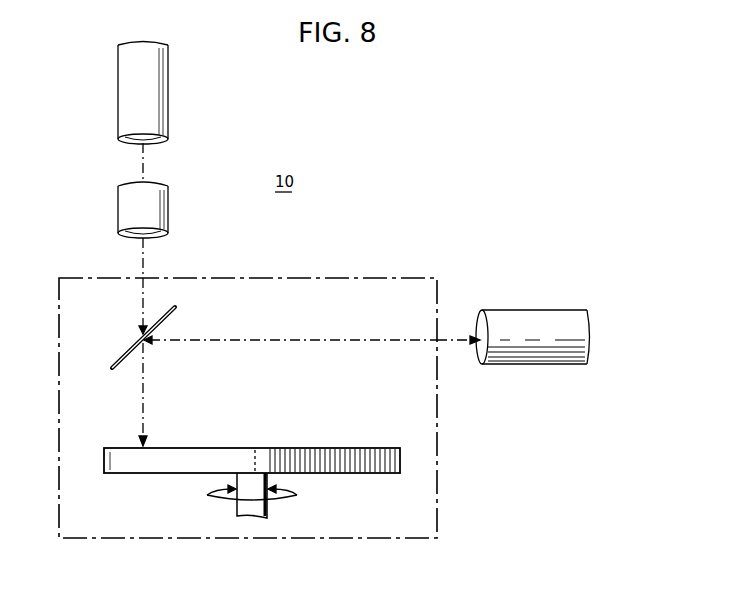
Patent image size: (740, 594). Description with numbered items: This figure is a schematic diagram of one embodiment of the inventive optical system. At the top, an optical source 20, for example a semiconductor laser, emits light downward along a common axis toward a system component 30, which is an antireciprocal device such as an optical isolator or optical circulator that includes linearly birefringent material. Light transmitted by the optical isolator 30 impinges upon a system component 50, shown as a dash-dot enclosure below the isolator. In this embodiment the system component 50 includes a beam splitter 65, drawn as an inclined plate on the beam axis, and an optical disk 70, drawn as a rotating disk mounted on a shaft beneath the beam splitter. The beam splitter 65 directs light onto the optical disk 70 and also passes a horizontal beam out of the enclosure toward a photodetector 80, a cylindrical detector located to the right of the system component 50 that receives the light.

The optical source 20 is at (120, 92).
The system component 30 is at (120, 207).
The system component 50 is at (312, 283).
The beam splitter 65 is at (174, 318).
The optical disk 70 is at (184, 448).
The photodetector 80 is at (530, 312).